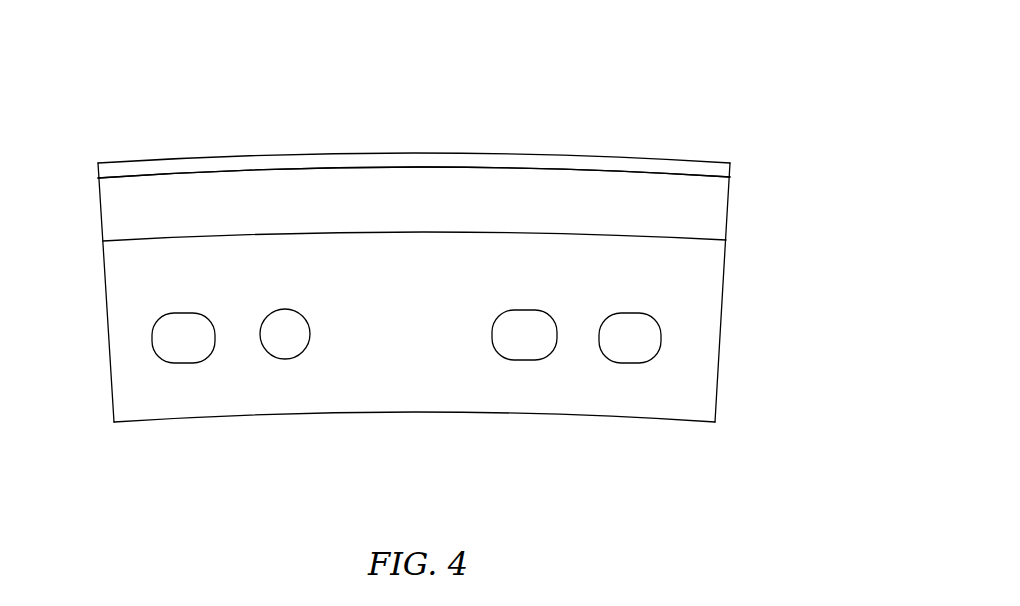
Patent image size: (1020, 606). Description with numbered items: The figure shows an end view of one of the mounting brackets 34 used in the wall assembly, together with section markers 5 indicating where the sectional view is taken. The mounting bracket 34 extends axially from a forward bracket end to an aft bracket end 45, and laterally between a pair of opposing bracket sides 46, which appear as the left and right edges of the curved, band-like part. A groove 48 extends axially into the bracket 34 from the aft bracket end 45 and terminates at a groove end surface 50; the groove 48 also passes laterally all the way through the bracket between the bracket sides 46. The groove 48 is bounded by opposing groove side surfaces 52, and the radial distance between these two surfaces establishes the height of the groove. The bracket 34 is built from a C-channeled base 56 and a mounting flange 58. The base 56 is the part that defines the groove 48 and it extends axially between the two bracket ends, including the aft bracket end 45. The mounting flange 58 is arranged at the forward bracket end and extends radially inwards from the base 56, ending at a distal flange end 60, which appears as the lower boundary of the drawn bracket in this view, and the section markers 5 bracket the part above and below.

The mounting bracket 34 is at (416, 255).
The aft bracket end 45 is at (423, 132).
The bracket sides 46 is at (102, 280).
The groove 48 is at (142, 209).
The groove end surface 50 is at (449, 212).
The groove side surfaces 52 is at (705, 183).
The C-channeled base 56 is at (611, 155).
The mounting flange 58 is at (459, 399).
The distal flange end 60 is at (681, 422).
The section line 5- 5 is at (414, 149).